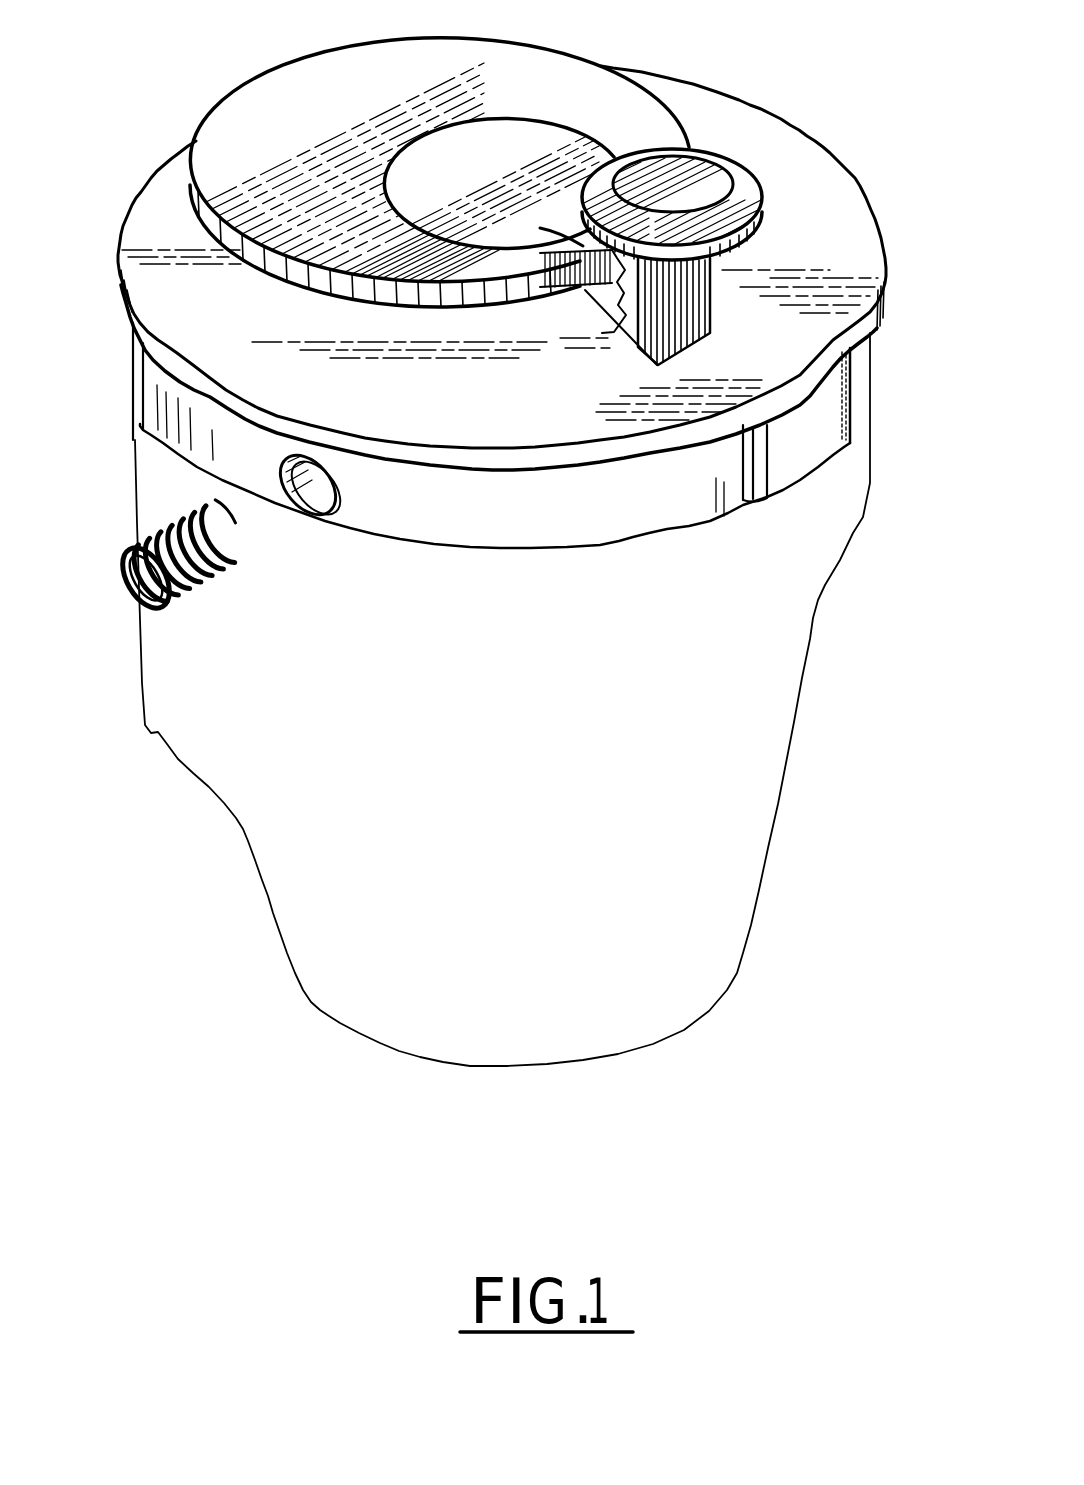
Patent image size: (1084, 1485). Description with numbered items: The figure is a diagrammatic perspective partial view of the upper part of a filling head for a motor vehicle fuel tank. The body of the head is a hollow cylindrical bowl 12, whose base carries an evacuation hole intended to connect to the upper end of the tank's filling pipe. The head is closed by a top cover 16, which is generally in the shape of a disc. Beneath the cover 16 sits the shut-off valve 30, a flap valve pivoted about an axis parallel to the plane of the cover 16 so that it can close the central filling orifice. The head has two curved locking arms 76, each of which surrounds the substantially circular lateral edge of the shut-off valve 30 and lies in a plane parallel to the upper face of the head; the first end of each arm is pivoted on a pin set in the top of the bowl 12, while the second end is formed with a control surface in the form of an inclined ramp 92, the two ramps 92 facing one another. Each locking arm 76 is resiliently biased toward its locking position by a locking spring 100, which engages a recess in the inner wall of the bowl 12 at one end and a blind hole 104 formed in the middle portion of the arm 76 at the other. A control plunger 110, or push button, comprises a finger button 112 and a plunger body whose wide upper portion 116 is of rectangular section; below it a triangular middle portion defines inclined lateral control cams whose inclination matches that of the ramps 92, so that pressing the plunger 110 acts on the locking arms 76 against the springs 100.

The hollow cylindrical bowl 12 is at (156, 735).
The top cover 16 is at (792, 185).
The shut-off valve 30 is at (505, 160).
The locking arm 76 is at (543, 503).
The inclined ramp 92 is at (757, 484).
The locking spring 100 is at (240, 553).
The blind hole 104 is at (303, 497).
The control plunger 110 is at (728, 148).
The finger button 112 is at (626, 189).
The wide upper portion 116 is at (700, 293).